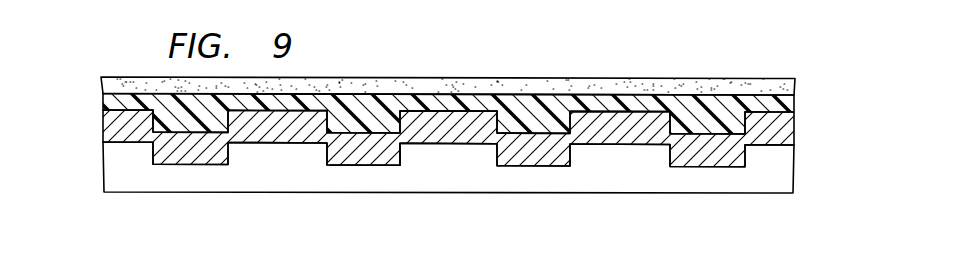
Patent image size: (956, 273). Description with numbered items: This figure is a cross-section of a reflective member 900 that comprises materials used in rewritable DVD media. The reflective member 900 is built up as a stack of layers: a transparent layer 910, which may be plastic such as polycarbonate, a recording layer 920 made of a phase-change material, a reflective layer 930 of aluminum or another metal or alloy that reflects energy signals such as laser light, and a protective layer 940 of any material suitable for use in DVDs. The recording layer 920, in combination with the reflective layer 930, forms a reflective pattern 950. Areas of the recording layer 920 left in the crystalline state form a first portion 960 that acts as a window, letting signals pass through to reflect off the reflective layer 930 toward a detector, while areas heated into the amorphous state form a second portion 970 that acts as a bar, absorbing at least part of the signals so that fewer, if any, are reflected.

The reflective member 900 is at (601, 57).
The transparent layer 910 is at (707, 187).
The recording layer 920 is at (103, 128).
The reflective layer 930 is at (790, 103).
The protective layer 940 is at (734, 81).
The reflective pattern 950 is at (390, 179).
The first portion 960 is at (350, 172).
The second portion 970 is at (447, 156).